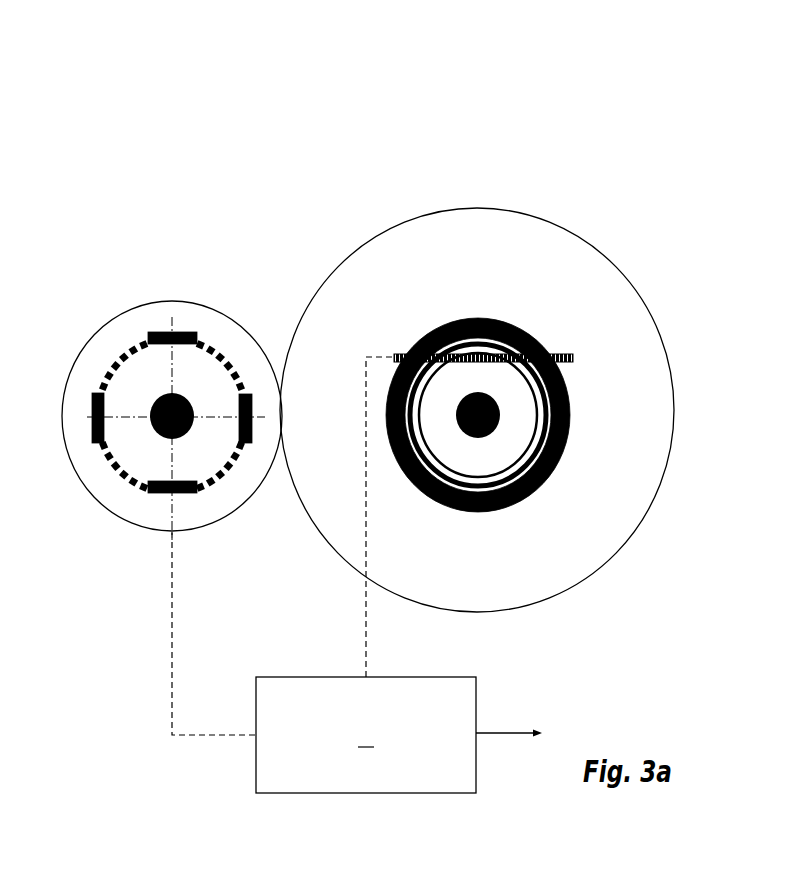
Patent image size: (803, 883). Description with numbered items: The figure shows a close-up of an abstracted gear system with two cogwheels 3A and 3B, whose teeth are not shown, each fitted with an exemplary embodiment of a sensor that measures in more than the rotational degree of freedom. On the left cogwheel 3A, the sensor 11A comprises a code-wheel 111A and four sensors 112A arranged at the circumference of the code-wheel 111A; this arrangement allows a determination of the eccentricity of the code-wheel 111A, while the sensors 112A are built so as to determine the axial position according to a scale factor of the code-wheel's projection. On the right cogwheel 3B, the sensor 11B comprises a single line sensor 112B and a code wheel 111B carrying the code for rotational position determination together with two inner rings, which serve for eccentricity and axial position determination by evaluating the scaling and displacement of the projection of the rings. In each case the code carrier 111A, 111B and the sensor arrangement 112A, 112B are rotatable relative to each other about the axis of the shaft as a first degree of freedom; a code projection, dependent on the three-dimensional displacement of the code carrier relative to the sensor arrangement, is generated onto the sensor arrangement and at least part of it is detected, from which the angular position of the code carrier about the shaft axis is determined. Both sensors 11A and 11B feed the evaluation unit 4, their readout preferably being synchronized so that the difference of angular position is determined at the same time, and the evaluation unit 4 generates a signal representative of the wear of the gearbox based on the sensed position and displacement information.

The cogwheel 3A is at (165, 382).
The sensor 11A is at (158, 355).
The code-wheel 111A is at (159, 306).
The sensors 112A is at (167, 288).
The cogwheel 3B is at (477, 354).
The sensor 11B is at (541, 325).
The code wheel 111B is at (510, 283).
The single line sensor 112B is at (510, 186).
The evaluation unit 4 is at (366, 735).